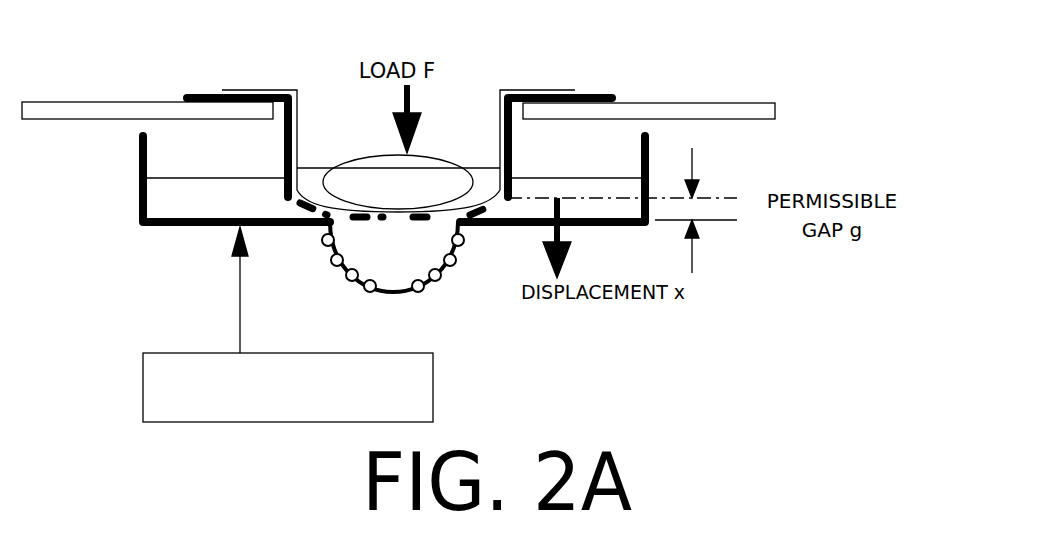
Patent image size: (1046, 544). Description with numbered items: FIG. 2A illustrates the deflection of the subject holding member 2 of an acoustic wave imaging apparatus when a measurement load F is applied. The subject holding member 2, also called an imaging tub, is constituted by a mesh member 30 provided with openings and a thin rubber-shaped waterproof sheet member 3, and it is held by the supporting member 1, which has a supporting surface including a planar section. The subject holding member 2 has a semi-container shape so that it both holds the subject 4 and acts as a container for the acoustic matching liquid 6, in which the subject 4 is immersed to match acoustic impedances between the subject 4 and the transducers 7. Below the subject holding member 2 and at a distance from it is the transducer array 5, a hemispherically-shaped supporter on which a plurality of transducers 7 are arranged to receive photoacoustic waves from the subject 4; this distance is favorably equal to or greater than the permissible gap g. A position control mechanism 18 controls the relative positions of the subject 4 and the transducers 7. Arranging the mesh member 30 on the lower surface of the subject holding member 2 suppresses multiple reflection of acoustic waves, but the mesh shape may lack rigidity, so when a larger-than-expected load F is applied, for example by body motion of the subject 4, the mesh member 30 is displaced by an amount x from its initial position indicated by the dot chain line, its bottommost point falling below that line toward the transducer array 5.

The supporting member 1 is at (105, 100).
The subject holding member 2 is at (205, 95).
The waterproof sheet member 3 is at (515, 95).
The subject 4 is at (367, 165).
The transducer array 5 is at (140, 158).
The acoustic matching liquid 6 is at (217, 190).
The transducers 7 is at (320, 240).
The position control mechanism 18 is at (175, 355).
The mesh member 30 is at (477, 198).